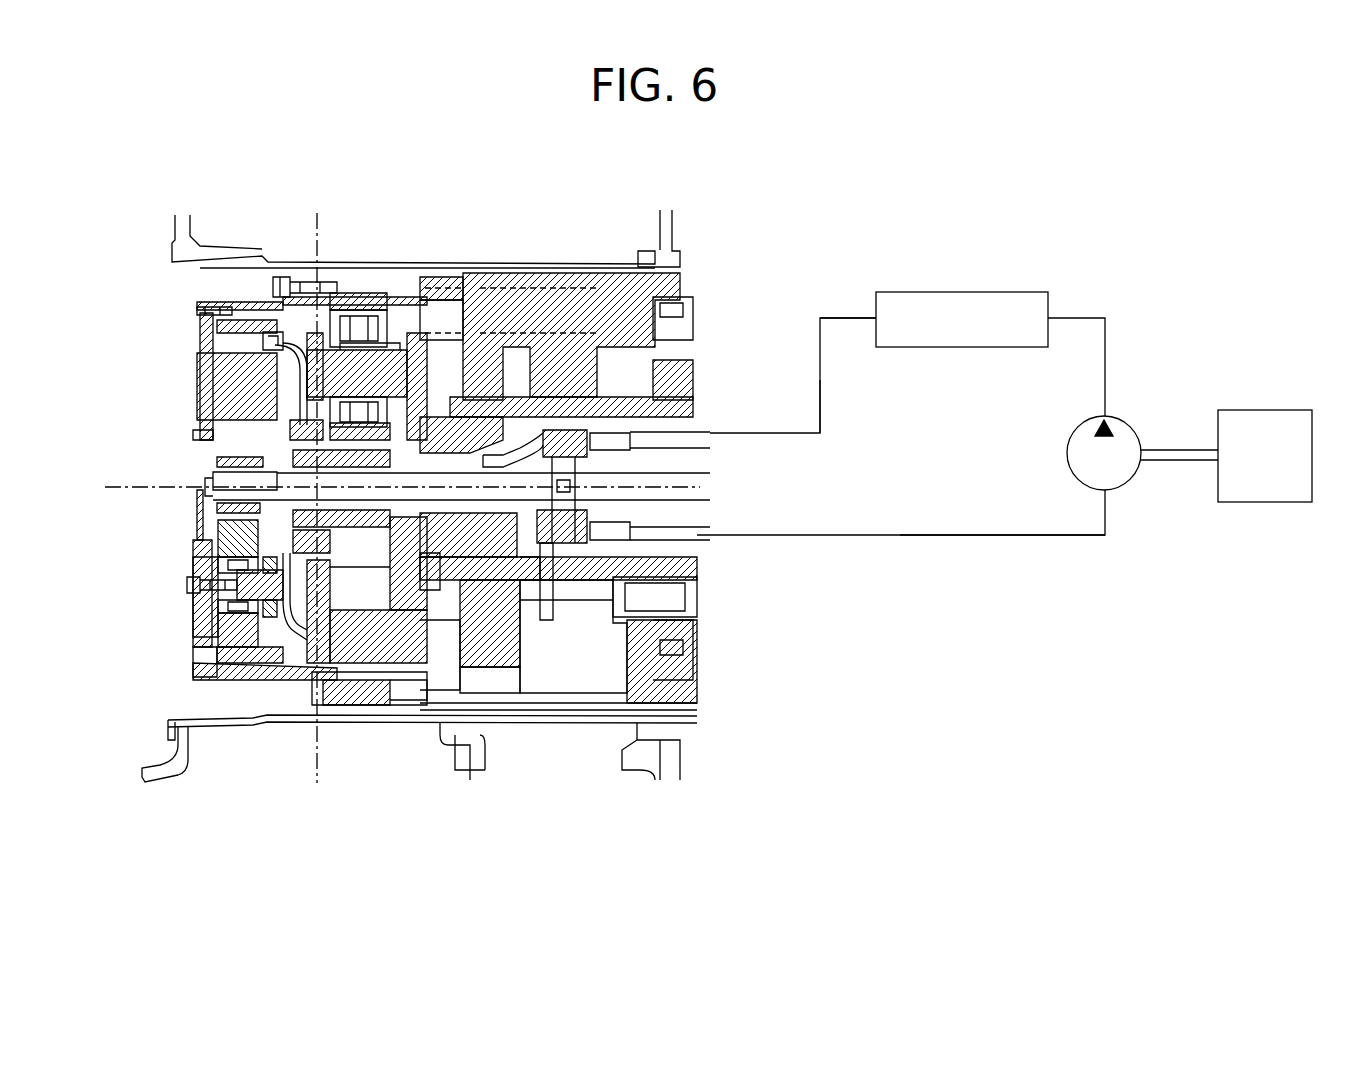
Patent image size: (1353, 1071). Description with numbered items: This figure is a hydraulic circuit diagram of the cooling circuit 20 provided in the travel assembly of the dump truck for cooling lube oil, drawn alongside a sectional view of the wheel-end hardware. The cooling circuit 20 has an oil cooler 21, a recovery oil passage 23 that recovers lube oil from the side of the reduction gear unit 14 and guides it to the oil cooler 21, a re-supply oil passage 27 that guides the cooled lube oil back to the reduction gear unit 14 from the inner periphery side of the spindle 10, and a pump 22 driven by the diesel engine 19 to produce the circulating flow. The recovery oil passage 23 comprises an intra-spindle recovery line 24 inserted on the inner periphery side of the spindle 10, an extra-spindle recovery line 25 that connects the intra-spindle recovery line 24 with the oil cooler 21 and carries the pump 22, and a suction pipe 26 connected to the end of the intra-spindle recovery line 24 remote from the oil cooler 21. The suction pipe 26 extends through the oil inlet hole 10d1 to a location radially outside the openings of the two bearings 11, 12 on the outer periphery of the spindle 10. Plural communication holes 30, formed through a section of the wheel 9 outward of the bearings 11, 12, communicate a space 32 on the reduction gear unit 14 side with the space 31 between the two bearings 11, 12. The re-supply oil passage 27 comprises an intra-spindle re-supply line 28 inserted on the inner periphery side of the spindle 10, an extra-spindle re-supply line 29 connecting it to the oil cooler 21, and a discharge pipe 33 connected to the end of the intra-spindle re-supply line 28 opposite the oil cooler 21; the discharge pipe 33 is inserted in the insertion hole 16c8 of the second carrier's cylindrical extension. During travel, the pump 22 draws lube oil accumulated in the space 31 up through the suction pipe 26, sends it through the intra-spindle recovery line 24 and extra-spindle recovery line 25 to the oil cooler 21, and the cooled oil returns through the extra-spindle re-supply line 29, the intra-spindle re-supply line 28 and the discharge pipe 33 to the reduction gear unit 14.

The wheel 9 is at (568, 270).
The spindle 10 is at (537, 400).
The oil inlet hole 10d1 is at (528, 580).
The bearing 11 is at (490, 613).
The bearing 12 is at (623, 607).
The reduction gear unit 14 is at (184, 321).
The insertion hole 16c8 is at (455, 465).
The diesel engine 19 is at (1270, 503).
The cooling circuit 20 is at (1108, 243).
The oil cooler 21 is at (990, 290).
The pump 22 is at (1132, 478).
The recovery oil passage 23 is at (938, 550).
The intra-spindle recovery line 24 is at (680, 530).
The extra-spindle recovery line 25 is at (863, 535).
The suction pipe 26 is at (550, 617).
The re-supply oil passage 27 is at (841, 302).
The intra-spindle re-supply line 28 is at (680, 440).
The extra-spindle re-supply line 29 is at (758, 428).
The communication holes 30 is at (480, 653).
The space 31 is at (592, 613).
The space 32 is at (456, 660).
The discharge pipe 33 is at (490, 460).